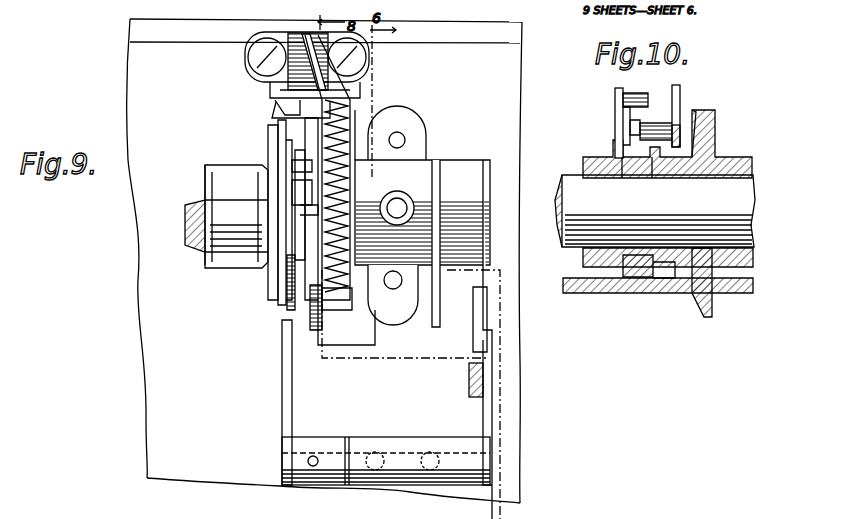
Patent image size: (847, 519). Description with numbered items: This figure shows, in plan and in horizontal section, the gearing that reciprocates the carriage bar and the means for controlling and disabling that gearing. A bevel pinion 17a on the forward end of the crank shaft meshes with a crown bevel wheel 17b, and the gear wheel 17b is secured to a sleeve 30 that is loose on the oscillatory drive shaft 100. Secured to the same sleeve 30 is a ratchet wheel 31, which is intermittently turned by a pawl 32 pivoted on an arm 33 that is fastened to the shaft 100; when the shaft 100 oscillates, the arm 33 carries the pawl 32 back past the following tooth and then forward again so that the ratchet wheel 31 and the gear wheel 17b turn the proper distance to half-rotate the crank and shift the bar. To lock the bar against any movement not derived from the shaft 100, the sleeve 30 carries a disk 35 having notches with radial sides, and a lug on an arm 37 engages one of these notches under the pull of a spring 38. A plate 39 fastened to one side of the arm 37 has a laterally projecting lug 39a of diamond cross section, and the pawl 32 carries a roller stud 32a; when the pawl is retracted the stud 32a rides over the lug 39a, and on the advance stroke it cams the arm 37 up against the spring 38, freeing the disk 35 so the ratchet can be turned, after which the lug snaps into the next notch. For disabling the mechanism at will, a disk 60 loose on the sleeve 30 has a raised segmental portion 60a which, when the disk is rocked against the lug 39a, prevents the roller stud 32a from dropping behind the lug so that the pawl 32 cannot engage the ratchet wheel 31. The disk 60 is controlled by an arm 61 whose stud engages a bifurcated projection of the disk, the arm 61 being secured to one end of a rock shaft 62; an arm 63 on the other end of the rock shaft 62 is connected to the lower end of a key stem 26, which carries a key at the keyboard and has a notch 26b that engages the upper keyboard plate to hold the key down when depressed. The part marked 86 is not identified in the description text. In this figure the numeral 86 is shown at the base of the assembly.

In FIG. 9, the bevel pinion 17a is at (282, 110).
In FIG. 9, the crown bevel wheel 17b is at (372, 118).
In FIG. 10, the crown bevel wheel 17b is at (712, 150).
In FIG. 9, the key stem 26 is at (482, 374).
In FIG. 9, the notch 26b is at (478, 340).
In FIG. 10, the sleeve 30 is at (706, 114).
In FIG. 9, the ratchet wheel 31 is at (295, 272).
In FIG. 10, the ratchet wheel 31 is at (624, 178).
In FIG. 9, the pawl 32 is at (280, 152).
In FIG. 10, the pawl 32 is at (615, 95).
In FIG. 9, the roller stud 32a is at (276, 158).
In FIG. 10, the roller stud 32a is at (638, 132).
In FIG. 9, the arm 33 is at (258, 200).
In FIG. 10, the arm 33 is at (616, 115).
In FIG. 9, the disk 35 is at (350, 304).
In FIG. 10, the disk 35 is at (690, 296).
In FIG. 9, the arm 37 is at (303, 282).
In FIG. 9, the spring 38 is at (290, 340).
In FIG. 9, the plate 39 is at (342, 168).
In FIG. 10, the plate 39 is at (677, 120).
In FIG. 9, the lug 39a is at (290, 248).
In FIG. 10, the lug 39a is at (636, 178).
In FIG. 9, the disk 60 is at (307, 252).
In FIG. 10, the disk 60 is at (655, 282).
In FIG. 10, the raised segmental portion 60a is at (674, 176).
In FIG. 9, the arm 61 is at (288, 398).
In FIG. 9, the rock shaft 62 is at (403, 453).
In FIG. 9, the arm 63 is at (486, 417).
In FIG. 9, the base 86 is at (386, 478).
In FIG. 9, the oscillatory drive shaft 100 is at (232, 222).
In FIG. 10, the oscillatory drive shaft 100 is at (578, 228).